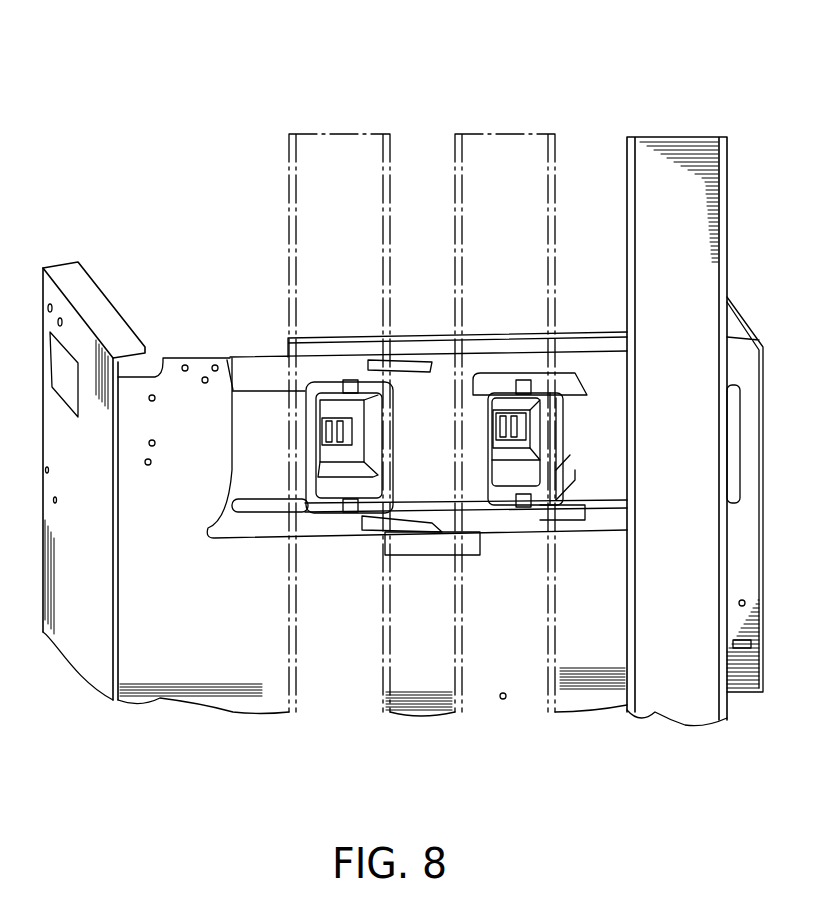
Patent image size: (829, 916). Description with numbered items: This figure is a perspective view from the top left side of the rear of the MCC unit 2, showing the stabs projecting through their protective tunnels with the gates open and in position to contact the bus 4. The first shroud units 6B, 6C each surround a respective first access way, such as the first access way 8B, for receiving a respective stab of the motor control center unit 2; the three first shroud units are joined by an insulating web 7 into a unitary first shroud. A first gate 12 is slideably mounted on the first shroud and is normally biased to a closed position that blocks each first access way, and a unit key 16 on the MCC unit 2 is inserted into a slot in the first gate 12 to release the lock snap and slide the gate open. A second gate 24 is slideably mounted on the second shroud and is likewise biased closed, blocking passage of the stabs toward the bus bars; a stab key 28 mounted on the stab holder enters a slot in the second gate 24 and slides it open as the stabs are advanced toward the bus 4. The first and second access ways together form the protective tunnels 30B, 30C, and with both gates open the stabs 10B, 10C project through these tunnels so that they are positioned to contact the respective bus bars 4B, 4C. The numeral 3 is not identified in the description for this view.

The MCC unit 2 is at (133, 727).
The rack post 3 is at (567, 687).
The bus 4 is at (578, 100).
The bus bar 4B is at (462, 705).
The bus bar 4C is at (307, 700).
The first shroud unit 6B is at (563, 483).
The first shroud unit 6C is at (305, 508).
The insulating web 7 is at (445, 491).
The first access way 8B is at (557, 508).
The stab 10B is at (523, 425).
The stab 10C is at (345, 433).
The first gate 12 is at (250, 443).
The unit key 16 is at (417, 545).
The second gate 24 is at (263, 384).
The stab key 28 is at (421, 360).
The protective tunnel 30B is at (545, 413).
The protective tunnel 30C is at (370, 418).